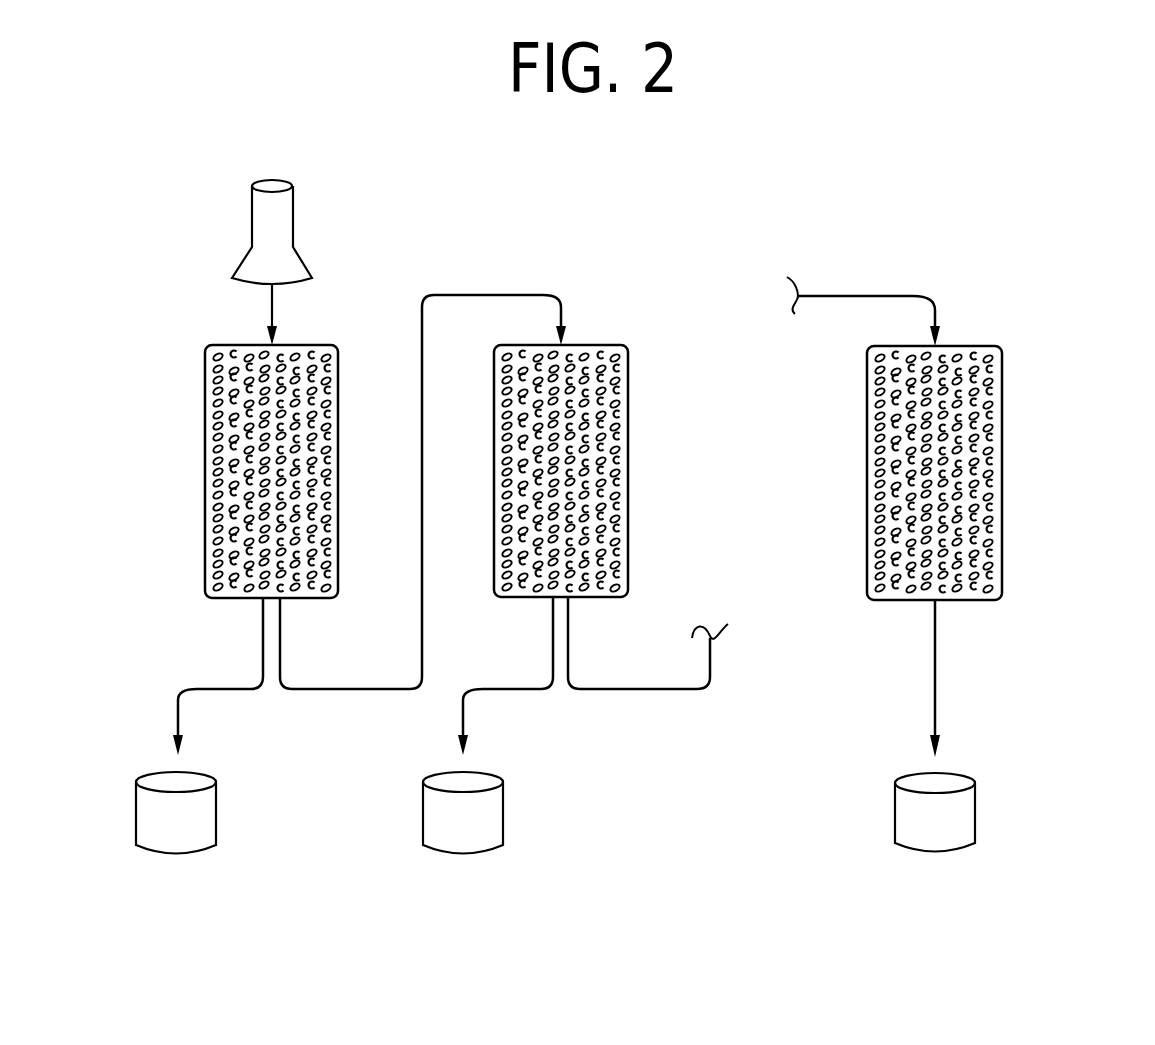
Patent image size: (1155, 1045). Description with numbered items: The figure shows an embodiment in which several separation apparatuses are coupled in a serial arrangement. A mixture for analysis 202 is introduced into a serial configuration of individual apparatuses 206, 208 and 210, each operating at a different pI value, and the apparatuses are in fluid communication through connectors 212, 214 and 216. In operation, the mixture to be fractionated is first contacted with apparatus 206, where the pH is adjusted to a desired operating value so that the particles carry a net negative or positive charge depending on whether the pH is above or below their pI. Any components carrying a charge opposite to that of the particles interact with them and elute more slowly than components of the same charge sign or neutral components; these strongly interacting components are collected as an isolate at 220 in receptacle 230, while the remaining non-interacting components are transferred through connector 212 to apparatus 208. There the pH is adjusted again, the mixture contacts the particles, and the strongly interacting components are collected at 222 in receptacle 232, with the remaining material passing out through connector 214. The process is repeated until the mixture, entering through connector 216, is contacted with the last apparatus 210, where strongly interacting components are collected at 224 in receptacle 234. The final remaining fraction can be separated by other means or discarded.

The mixture for analysis 202 is at (295, 208).
The first separation apparatus 206 is at (205, 453).
The second separation apparatus 208 is at (600, 345).
The last separation apparatus 210 is at (1002, 460).
The connector 212 is at (342, 690).
The connector 214 is at (660, 690).
The connector 216 is at (862, 296).
The isolate collection outlet 220 is at (173, 715).
The isolate collection outlet 222 is at (463, 713).
The isolate collection outlet 224 is at (937, 630).
The receptacle 230 is at (135, 822).
The receptacle 232 is at (423, 822).
The receptacle 234 is at (977, 807).